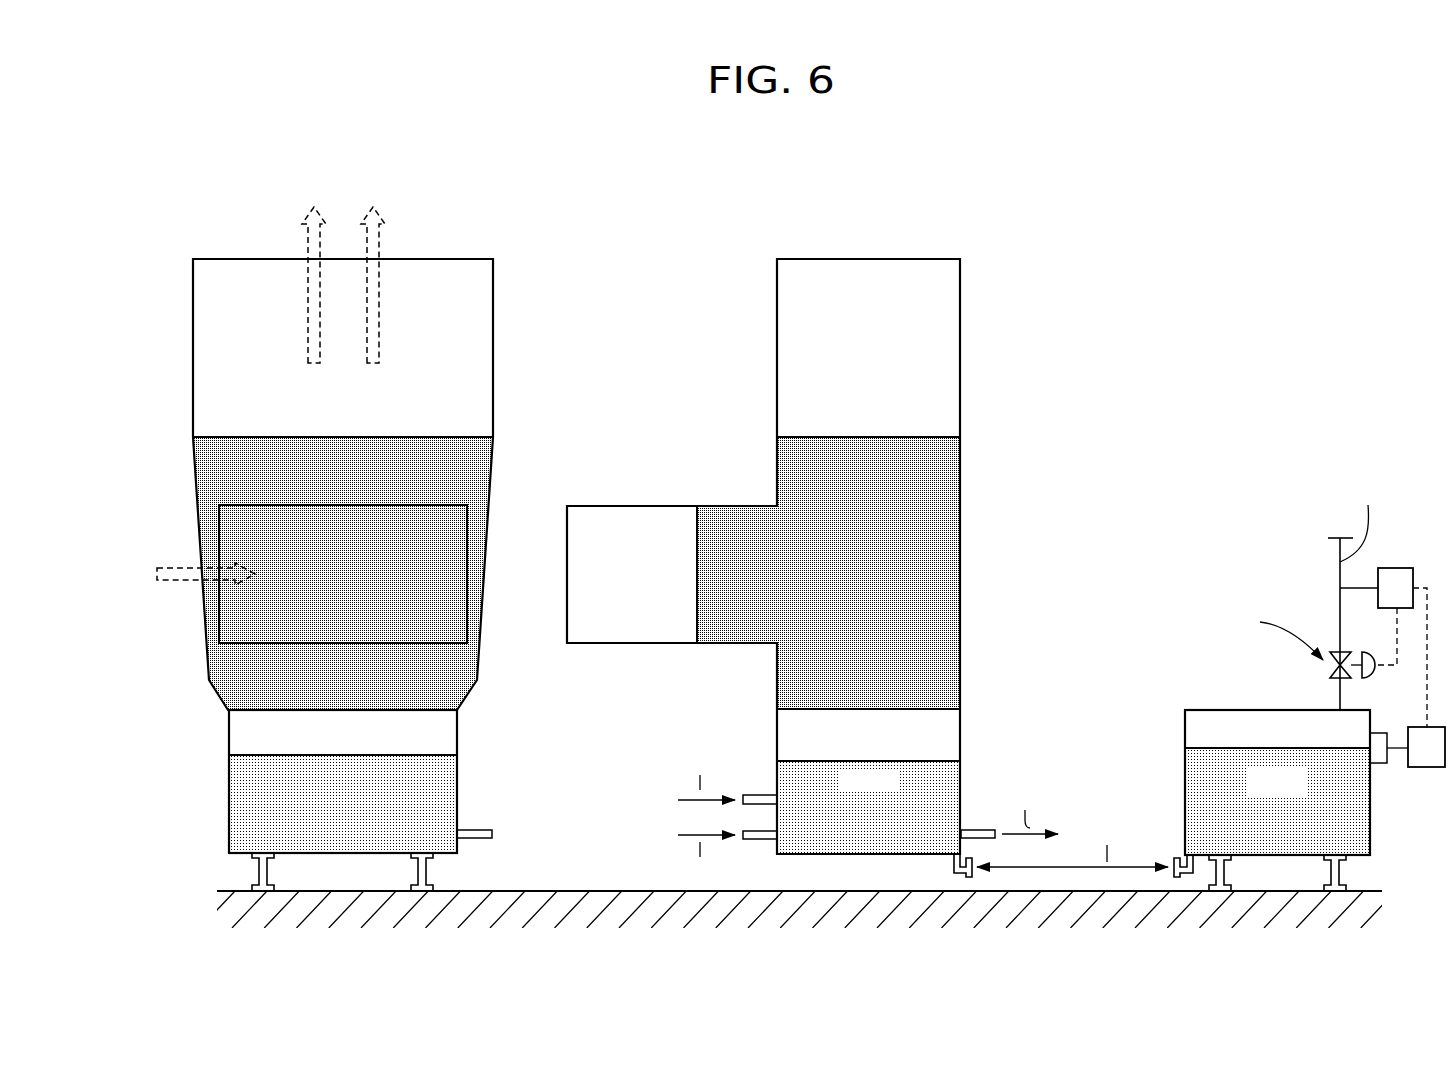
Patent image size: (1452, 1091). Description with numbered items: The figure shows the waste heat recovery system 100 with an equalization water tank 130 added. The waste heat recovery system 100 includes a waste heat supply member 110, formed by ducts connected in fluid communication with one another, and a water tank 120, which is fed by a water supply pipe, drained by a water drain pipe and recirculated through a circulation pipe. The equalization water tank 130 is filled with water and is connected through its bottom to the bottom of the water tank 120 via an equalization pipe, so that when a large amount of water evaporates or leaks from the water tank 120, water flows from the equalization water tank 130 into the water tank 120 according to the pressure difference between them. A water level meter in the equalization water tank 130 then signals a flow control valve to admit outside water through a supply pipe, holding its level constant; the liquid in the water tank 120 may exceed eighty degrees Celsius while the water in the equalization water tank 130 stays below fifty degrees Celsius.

The waste heat recovery system 100 is at (759, 567).
The waste heat supply member 110 is at (188, 628).
The water tank 120 is at (223, 798).
The equalization water tank 130 is at (1206, 781).